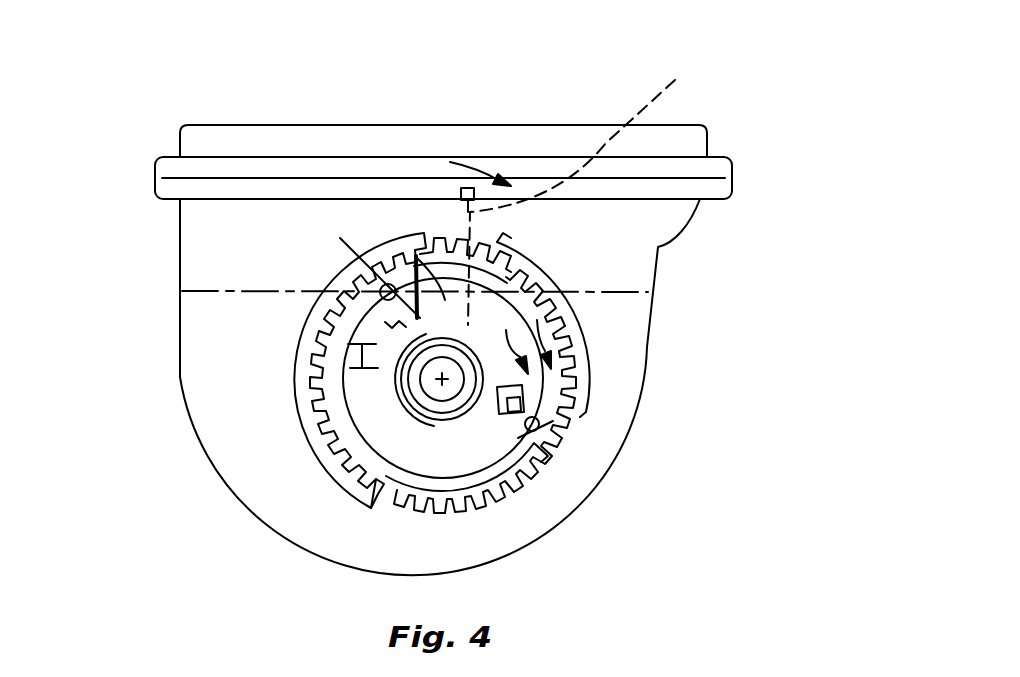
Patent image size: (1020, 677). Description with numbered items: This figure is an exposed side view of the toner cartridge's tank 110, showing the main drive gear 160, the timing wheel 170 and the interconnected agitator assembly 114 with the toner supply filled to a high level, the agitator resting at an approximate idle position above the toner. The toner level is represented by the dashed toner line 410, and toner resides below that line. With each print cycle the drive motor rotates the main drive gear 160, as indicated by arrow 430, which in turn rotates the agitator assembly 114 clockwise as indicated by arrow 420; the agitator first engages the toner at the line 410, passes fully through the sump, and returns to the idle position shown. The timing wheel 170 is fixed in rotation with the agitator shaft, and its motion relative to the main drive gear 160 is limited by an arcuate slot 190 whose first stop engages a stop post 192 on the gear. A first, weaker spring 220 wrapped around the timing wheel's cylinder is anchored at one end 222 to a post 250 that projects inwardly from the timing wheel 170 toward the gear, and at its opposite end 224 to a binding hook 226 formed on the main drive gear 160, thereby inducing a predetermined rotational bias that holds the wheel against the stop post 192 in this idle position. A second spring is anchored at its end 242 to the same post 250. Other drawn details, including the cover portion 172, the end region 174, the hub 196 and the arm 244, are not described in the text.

The housing 110 is at (710, 128).
The agitator assembly 114 is at (600, 193).
The main drive gear 160 is at (523, 510).
The timing wheel 170 is at (285, 438).
The cover segment 172 is at (500, 234).
The stop end 174 is at (383, 527).
The arcuate slot 190 is at (537, 251).
The stop post 192 is at (405, 372).
The hub 196 is at (507, 315).
The first spring 220 is at (385, 322).
The end of first spring 222 is at (557, 420).
The opposite end of first spring 224 is at (375, 293).
The binding hook 226 is at (390, 297).
The end of second spring 242 is at (460, 418).
The lever arm 244 is at (417, 258).
The post 250 is at (540, 450).
The toner line 410 is at (632, 292).
The arrow 420 is at (480, 163).
The arrow 430 is at (587, 335).